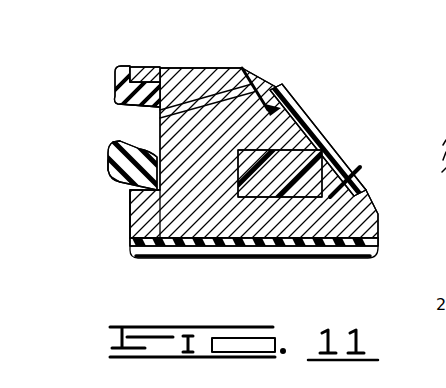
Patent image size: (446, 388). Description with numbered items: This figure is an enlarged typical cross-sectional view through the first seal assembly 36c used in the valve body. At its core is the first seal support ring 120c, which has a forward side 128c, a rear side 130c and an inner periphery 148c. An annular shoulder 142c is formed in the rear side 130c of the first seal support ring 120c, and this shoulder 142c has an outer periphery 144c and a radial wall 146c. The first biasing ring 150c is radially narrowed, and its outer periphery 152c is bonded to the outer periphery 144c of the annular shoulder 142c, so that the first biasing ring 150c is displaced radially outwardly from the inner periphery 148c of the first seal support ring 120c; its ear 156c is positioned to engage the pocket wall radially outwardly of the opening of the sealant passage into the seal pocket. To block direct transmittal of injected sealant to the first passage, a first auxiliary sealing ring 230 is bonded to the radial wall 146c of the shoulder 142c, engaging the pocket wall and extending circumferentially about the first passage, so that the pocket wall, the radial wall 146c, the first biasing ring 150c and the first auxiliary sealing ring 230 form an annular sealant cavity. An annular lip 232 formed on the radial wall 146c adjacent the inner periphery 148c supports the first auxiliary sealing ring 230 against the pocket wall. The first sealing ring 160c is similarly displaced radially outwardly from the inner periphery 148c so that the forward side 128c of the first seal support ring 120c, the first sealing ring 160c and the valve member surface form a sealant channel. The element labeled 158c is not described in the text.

The first seal assembly 36c is at (259, 59).
The first seal support ring 120c is at (229, 222).
The forward side 128c is at (248, 72).
The rear side 130c is at (130, 224).
The annular shoulder 142c is at (155, 203).
The outer periphery of the annular shoulder 144c is at (130, 191).
The radial wall 146c is at (157, 118).
The inner periphery 148c is at (204, 67).
The first biasing ring 150c is at (110, 141).
The outer periphery of the first biasing ring 152c is at (130, 238).
The ear 156c is at (118, 180).
The lip spring band 158c is at (111, 165).
The first sealing ring 160c is at (298, 118).
The first auxiliary sealing ring 230 is at (120, 64).
The annular lip 232 is at (149, 72).